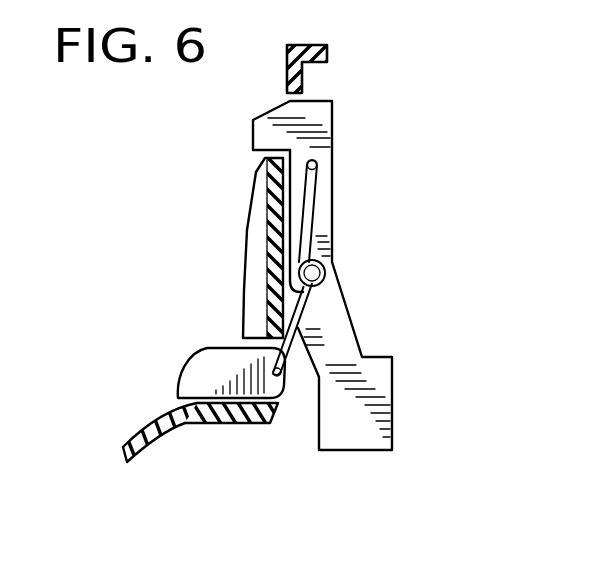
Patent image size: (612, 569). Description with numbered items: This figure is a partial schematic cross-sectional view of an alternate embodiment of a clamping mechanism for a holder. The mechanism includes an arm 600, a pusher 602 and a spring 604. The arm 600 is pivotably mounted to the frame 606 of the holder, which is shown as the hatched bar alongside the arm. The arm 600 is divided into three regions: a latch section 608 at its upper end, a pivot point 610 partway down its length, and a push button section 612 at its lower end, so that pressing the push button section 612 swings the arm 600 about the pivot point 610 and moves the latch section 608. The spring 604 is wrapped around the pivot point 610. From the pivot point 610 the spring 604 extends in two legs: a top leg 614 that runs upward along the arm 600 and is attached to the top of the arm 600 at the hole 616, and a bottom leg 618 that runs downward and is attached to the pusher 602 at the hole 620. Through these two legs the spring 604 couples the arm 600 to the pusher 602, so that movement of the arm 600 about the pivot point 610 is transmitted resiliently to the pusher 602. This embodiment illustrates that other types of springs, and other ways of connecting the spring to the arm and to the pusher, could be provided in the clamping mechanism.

The arm 600 is at (333, 115).
The pusher 602 is at (207, 352).
The spring 604 is at (323, 308).
The frame 606 is at (248, 218).
The latch section 608 is at (252, 133).
The pivot point 610 is at (310, 276).
The push button section 612 is at (393, 400).
The top leg 614 is at (314, 212).
The hole 616 is at (320, 159).
The bottom leg 618 is at (300, 345).
The hole 620 is at (285, 395).